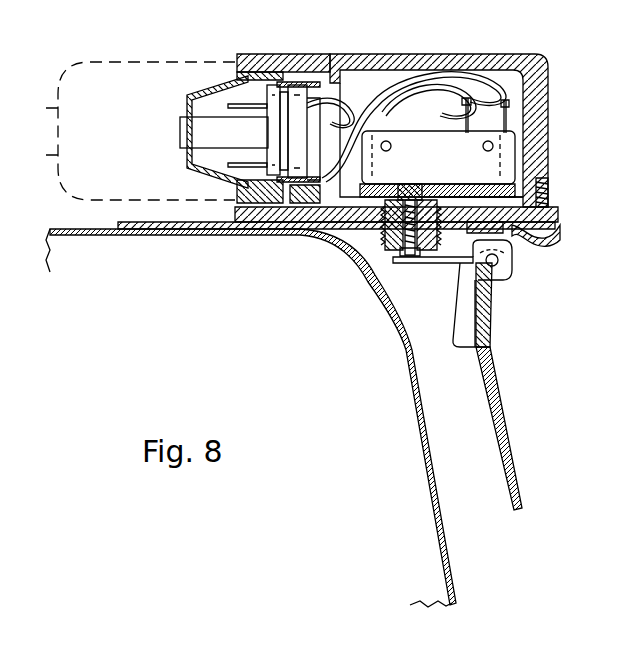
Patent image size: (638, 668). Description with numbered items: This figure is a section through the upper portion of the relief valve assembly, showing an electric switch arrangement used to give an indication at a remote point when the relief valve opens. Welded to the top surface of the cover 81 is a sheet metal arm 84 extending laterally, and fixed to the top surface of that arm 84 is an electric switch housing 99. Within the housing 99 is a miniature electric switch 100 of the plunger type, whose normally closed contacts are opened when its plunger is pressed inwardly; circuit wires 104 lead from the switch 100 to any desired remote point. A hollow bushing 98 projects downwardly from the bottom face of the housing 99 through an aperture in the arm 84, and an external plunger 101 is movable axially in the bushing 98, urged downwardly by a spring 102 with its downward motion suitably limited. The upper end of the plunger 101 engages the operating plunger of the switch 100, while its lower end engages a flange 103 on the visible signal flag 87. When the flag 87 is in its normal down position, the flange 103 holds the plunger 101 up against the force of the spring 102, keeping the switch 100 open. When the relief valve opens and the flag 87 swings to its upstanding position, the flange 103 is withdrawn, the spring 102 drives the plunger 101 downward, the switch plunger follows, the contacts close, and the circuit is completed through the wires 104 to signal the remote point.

The cover 81 is at (408, 358).
The sheet metal arm 84 is at (300, 233).
The visible signal member or flag 87 is at (490, 412).
The hollow bushing 98 is at (385, 252).
The electric switch housing 99 is at (392, 54).
The electric switch 100 is at (366, 160).
The external plunger 101 is at (425, 196).
The spring 102 is at (395, 264).
The flange 103 is at (440, 264).
The circuit wires 104 is at (330, 118).